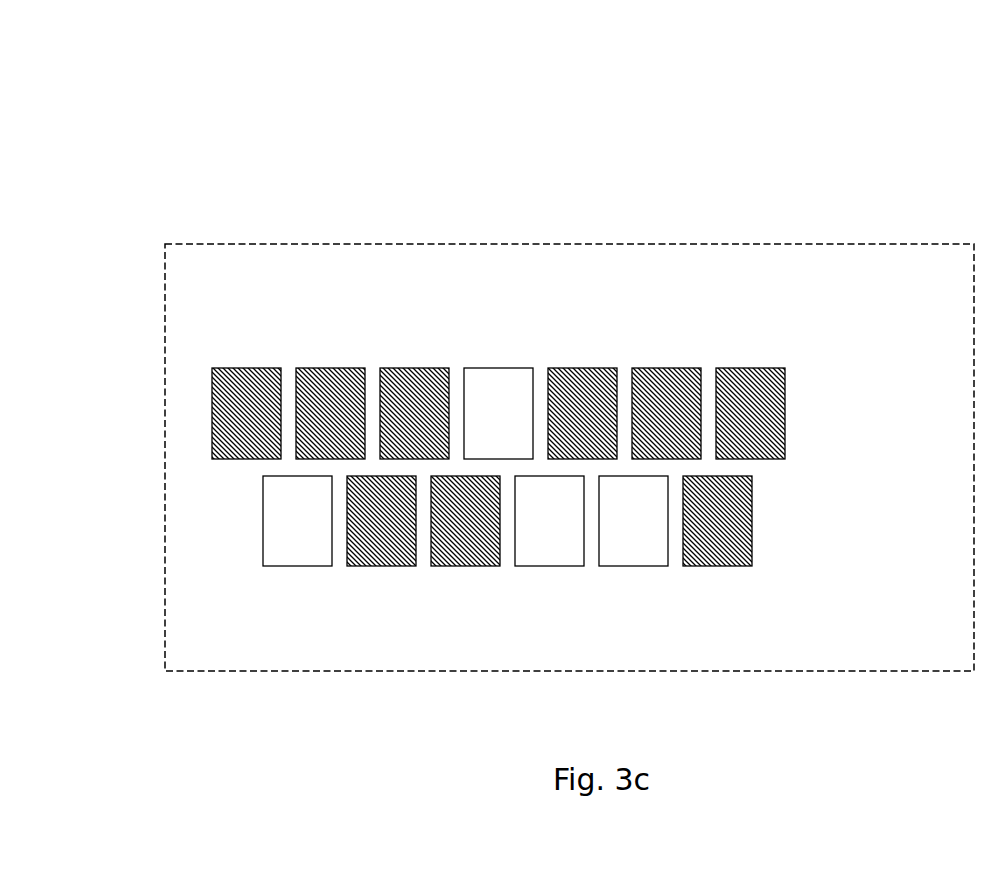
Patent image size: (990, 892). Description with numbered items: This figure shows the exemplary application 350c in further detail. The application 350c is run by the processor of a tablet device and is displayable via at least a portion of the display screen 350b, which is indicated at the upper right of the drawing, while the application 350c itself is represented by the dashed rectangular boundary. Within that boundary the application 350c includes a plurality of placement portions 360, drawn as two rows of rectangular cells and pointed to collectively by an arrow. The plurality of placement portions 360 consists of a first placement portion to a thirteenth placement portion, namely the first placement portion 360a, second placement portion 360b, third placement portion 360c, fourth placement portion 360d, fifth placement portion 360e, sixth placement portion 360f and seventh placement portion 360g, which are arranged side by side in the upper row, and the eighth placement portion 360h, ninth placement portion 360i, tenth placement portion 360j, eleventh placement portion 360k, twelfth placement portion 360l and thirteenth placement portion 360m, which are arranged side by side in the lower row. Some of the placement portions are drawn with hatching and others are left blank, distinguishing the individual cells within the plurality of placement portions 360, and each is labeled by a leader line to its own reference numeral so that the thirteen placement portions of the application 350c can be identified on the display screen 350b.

The display screen 350b is at (783, 110).
The exemplary application 350c is at (627, 243).
The plurality of placement portions 360 is at (802, 488).
The first placement portion 360a is at (248, 368).
The second placement portion 360b is at (332, 368).
The third placement portion 360c is at (416, 368).
The fourth placement portion 360d is at (500, 368).
The fifth placement portion 360e is at (584, 368).
The sixth placement portion 360f is at (668, 368).
The seventh placement portion 360g is at (752, 368).
The eighth placement portion 360h is at (295, 566).
The ninth placement portion 360i is at (387, 566).
The tenth placement portion 360j is at (468, 566).
The eleventh placement portion 360k is at (550, 566).
The twelfth placement portion 360l is at (647, 566).
The thirteenth placement portion 360m is at (728, 566).